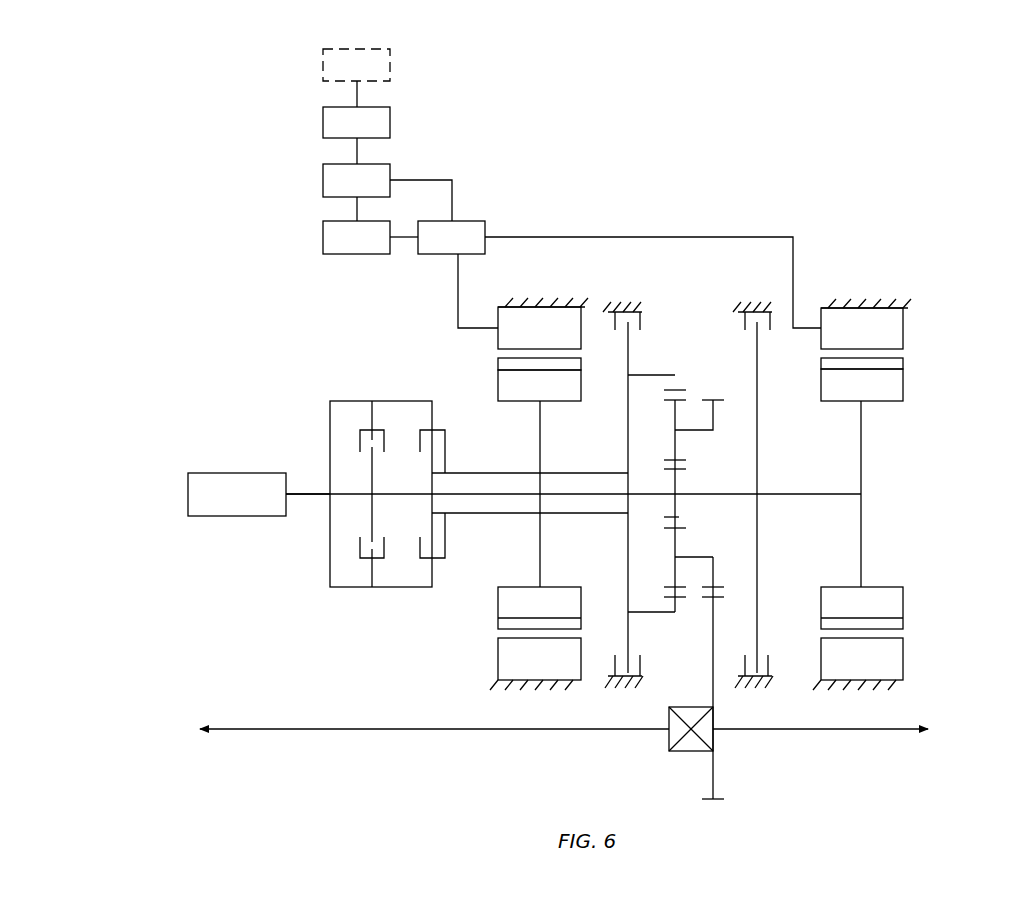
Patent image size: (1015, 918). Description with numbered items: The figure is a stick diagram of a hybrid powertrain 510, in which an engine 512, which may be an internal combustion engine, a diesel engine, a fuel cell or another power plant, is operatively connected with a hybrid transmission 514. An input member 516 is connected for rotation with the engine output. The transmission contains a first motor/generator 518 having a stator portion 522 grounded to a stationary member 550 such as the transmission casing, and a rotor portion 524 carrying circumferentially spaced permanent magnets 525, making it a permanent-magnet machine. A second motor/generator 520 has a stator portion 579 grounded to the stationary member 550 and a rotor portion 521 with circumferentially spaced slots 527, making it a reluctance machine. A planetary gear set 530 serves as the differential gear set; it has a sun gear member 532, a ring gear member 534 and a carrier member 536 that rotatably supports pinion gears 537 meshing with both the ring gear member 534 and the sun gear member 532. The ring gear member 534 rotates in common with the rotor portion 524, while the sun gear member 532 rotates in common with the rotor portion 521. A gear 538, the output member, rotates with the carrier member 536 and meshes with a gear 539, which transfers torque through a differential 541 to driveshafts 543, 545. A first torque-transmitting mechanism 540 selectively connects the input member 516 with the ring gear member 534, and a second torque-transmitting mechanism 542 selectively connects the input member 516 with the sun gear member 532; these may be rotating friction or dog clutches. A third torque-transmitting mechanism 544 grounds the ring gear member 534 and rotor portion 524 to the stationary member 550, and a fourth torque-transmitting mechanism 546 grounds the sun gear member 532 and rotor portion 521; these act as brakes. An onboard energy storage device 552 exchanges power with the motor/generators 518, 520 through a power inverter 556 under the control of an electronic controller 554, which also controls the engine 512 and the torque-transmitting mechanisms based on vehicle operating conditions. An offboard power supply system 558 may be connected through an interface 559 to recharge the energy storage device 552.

The powertrain 510 is at (231, 618).
The engine 512 is at (237, 516).
The hybrid transmission 514 is at (353, 641).
The input member 516 is at (312, 482).
The first motor/generator 518 is at (448, 447).
The second motor/generator 520 is at (912, 428).
The rotor portion 521 is at (903, 390).
The stator portion 522 is at (498, 334).
The rotor portion 524 is at (498, 390).
The permanent magnets 525 is at (498, 364).
The slots 527 is at (903, 364).
The planetary gear set 530 is at (685, 475).
The sun gear member 532 is at (675, 482).
The ring gear member 534 is at (680, 390).
The carrier member 536 is at (690, 557).
The pinion gears 537 is at (670, 540).
The gear 538 is at (713, 570).
The gear 539 is at (713, 697).
The first torque-transmitting mechanism 540 is at (445, 462).
The differential 541 is at (690, 751).
The second torque-transmitting mechanism 542 is at (363, 545).
The driveshaft 543 is at (483, 730).
The third torque-transmitting mechanism 544 is at (619, 335).
The driveshaft 545 is at (865, 730).
The fourth torque-transmitting mechanism 546 is at (763, 338).
The stationary member 550 is at (500, 307).
The energy storage device 552 is at (356, 167).
The electronic controller 554 is at (356, 225).
The power inverter 556 is at (605, 254).
The offboard power supply system 558 is at (390, 67).
The interface 559 is at (390, 120).
The stator portion 579 is at (903, 334).